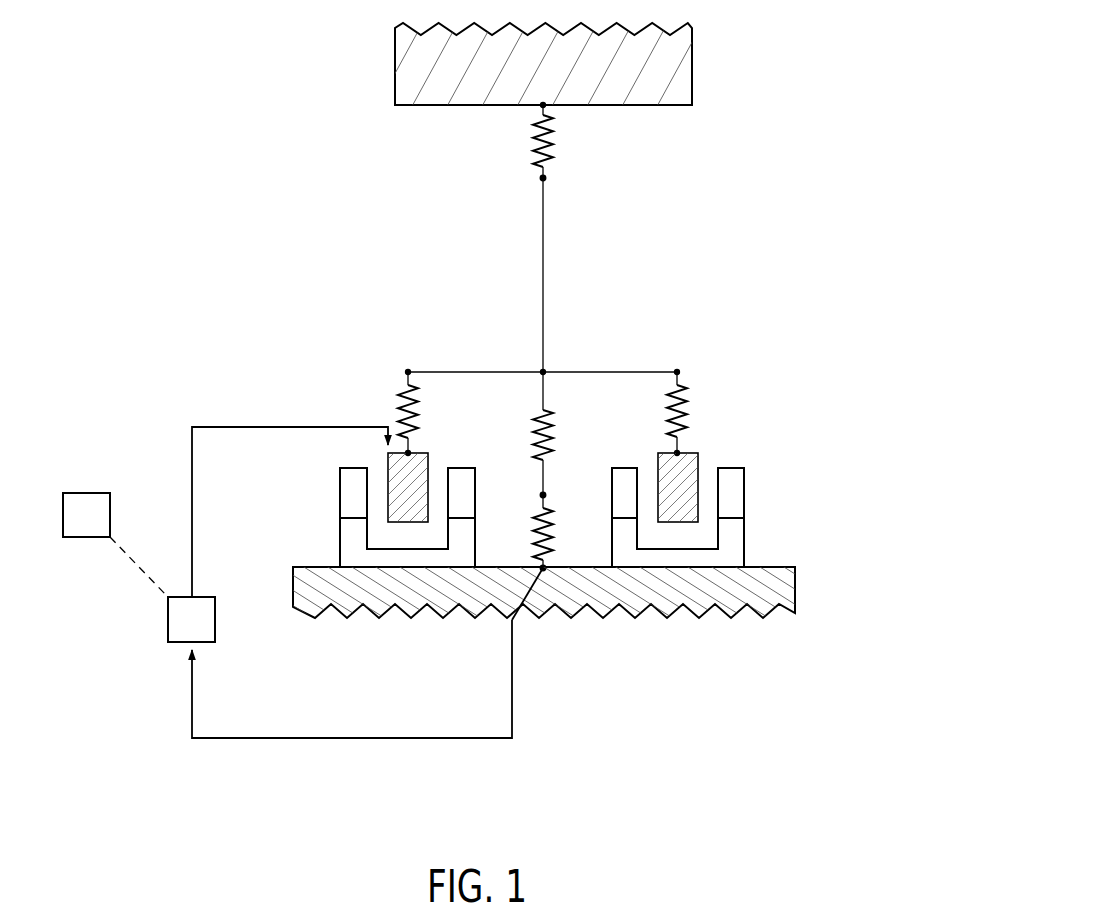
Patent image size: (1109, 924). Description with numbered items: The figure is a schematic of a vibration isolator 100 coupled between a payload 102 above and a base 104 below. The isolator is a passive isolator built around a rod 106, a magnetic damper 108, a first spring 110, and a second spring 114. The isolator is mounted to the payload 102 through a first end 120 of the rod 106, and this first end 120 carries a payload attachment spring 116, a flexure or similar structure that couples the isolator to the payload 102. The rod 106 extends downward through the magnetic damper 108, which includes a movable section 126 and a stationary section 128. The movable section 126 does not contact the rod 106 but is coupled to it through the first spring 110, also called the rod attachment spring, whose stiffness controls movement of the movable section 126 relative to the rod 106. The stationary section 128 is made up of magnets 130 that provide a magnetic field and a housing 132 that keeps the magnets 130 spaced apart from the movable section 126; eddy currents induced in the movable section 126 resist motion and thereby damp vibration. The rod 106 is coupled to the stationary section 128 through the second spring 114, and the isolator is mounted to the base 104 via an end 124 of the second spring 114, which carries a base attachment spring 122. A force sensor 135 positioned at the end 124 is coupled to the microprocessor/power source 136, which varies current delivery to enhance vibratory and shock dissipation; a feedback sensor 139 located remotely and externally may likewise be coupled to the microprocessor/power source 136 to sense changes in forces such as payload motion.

The vibration isolator 100 is at (772, 203).
The payload 102 is at (703, 70).
The base 104 is at (307, 568).
The rod 106 is at (566, 300).
The magnetic damper 108 is at (767, 448).
The first spring 110 is at (704, 395).
The second spring 114 is at (561, 440).
The payload attachment spring 116 is at (527, 152).
The first end 120 is at (553, 180).
The base attachment spring 122 is at (565, 549).
The end 124 is at (552, 489).
The movable section 126 is at (706, 443).
The stationary section 128 is at (783, 480).
The magnets 130 is at (759, 475).
The housing 132 is at (759, 537).
The force sensor 135 is at (548, 579).
The microprocessor/power source 136 is at (165, 651).
The feedback sensor 139 is at (74, 477).